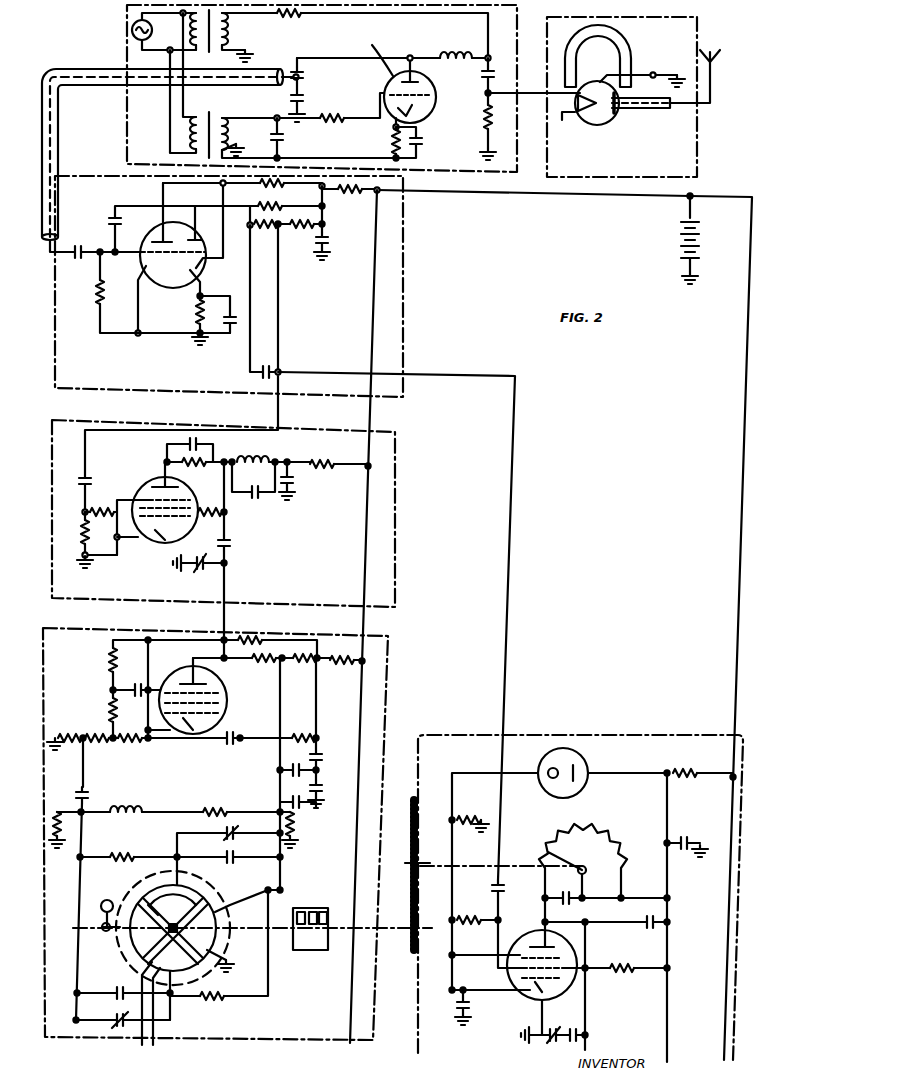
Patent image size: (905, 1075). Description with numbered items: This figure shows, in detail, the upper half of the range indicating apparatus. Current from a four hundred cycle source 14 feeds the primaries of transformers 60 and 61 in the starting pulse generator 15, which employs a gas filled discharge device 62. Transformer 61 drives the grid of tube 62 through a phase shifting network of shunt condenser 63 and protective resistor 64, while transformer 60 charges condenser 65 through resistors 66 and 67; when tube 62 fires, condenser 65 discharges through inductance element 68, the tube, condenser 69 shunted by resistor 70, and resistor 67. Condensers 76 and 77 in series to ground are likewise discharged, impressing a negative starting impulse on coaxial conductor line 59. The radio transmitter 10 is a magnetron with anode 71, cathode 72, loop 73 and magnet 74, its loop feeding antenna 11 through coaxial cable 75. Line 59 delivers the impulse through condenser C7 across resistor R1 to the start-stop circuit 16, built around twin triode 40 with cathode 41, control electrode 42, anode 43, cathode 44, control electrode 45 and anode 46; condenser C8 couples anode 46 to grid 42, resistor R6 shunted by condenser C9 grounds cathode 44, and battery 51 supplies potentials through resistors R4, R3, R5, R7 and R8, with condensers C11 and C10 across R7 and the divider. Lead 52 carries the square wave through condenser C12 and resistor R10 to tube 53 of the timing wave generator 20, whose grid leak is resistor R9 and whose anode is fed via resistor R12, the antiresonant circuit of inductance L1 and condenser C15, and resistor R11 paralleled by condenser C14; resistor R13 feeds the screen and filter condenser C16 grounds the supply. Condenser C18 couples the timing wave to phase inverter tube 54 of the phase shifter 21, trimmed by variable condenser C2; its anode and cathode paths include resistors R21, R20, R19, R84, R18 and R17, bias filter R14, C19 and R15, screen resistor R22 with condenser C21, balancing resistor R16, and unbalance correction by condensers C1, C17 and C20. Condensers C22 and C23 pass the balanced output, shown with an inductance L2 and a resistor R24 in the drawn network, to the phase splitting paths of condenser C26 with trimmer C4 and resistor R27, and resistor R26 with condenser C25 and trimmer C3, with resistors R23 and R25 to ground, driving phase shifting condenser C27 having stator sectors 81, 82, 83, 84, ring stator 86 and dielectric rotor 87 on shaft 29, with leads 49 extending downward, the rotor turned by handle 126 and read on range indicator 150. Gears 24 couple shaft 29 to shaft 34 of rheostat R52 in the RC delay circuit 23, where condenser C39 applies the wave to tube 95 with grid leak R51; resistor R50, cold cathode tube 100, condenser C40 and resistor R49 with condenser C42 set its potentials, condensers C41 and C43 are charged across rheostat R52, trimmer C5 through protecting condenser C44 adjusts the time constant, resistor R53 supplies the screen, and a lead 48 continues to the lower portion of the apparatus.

The radio transmitter 10 is at (698, 40).
The antenna 11 is at (721, 53).
The source 14 is at (131, 27).
The starting pulse generator 15 is at (519, 34).
The start-stop circuit 16 is at (403, 268).
The timing wave generator 20 is at (397, 498).
The phase shifter 21 is at (389, 653).
The RC delay circuit 23 is at (418, 1032).
The gears 24 is at (409, 918).
The condenser shaft 29 is at (284, 926).
The shaft of the variable resistor 34 is at (464, 866).
The electric discharge device 40 is at (164, 287).
The cathode 41 is at (146, 301).
The control electrode 42 is at (141, 255).
The anode 43 is at (152, 242).
The cathode 44 is at (201, 279).
The control electrode 45 is at (206, 261).
The anode 46 is at (198, 238).
The lead 48 is at (587, 1038).
The leads 49 is at (146, 1062).
The battery 51 is at (680, 239).
The lead 52 is at (280, 408).
The electric discharge device 53 is at (166, 538).
The electric discharge device 54 is at (228, 695).
The coaxial conductor line 59 is at (41, 116).
The transformer 60 is at (214, 50).
The transformer 61 is at (210, 113).
The gaseous discharge device 62 is at (426, 109).
The shunt condenser 63 is at (283, 141).
The protective resistor 64 is at (337, 116).
The condenser 65 is at (491, 74).
The resistor 66 is at (294, 18).
The resistor 67 is at (492, 125).
The inductance element 68 is at (457, 54).
The condenser 69 is at (415, 146).
The resistor 70 is at (390, 142).
The anode 71 is at (608, 126).
The cathode 72 is at (582, 124).
The loop 73 is at (617, 110).
The magnet 74 is at (630, 42).
The coaxial conductor cable 75 is at (658, 112).
The condenser 76 is at (306, 77).
The condenser 77 is at (306, 100).
The stator sector 81 is at (221, 919).
The stator sector 82 is at (149, 889).
The stator sector 83 is at (129, 905).
The stator sector 84 is at (195, 964).
The ring stator 86 is at (130, 963).
The dielectric rotor 87 is at (205, 904).
The electric discharge tube 95 is at (536, 930).
The cold cathode tube 100 is at (576, 764).
The handle 126 is at (98, 935).
The range indicator 150 is at (318, 906).
The variable condenser C1 is at (320, 769).
The variable condenser C2 is at (199, 568).
The variable condenser C3 is at (121, 1021).
The variable condenser C4 is at (230, 841).
The trimmer condenser C5 is at (550, 1031).
The condenser C7 is at (78, 244).
The condenser C8 is at (112, 221).
The condenser C9 is at (235, 328).
The condenser C10 is at (327, 239).
The condenser C11 is at (264, 364).
The condenser C12 is at (82, 476).
The condenser C14 is at (180, 442).
The condenser C15 is at (252, 495).
The filter condenser C16 is at (292, 485).
The condenser C17 is at (296, 806).
The condenser C18 is at (236, 592).
The condenser C19 is at (134, 700).
The protecting condenser C20 is at (287, 766).
The condenser C21 is at (228, 745).
The condenser C22 is at (306, 785).
The condenser C23 is at (76, 800).
The condenser C25 is at (123, 995).
The condenser C26 is at (252, 864).
The phase shifting condenser C27 is at (231, 953).
The condenser C39 is at (500, 874).
The condenser C40 is at (686, 839).
The condenser C41 is at (566, 905).
The condenser C42 is at (470, 1006).
The condenser C43 is at (605, 968).
The protecting condenser C44 is at (574, 1028).
The inductance element L1 is at (262, 459).
The inductor L2 is at (142, 801).
The resistor R1 is at (96, 293).
The resistor R3 is at (254, 188).
The resistor R4 is at (351, 198).
The resistor R5 is at (256, 204).
The resistor R6 is at (198, 316).
The resistor R7 is at (265, 296).
The resistor R8 is at (301, 216).
The grid leak resistor R9 is at (80, 536).
The resistor R10 is at (117, 522).
The resistor R11 is at (194, 468).
The resistor R12 is at (340, 453).
The resistor R13 is at (212, 498).
The resistor R14 is at (108, 706).
The resistor R15 is at (108, 663).
The resistor R16 is at (257, 640).
The resistor R17 is at (68, 740).
The resistor R18 is at (97, 744).
The resistor R19 is at (266, 665).
The resistor R20 is at (309, 667).
The resistor R21 is at (346, 652).
The resistor R22 is at (299, 774).
The resistor R23 is at (293, 826).
The resistor R24 is at (243, 803).
The resistor R25 is at (55, 828).
The resistor R26 is at (220, 953).
The resistor R27 is at (149, 848).
The resistor R49 is at (469, 894).
The resistor R50 is at (699, 907).
The grid leak resistor R51 is at (474, 911).
The rheostat R52 is at (583, 875).
The resistor R53 is at (616, 959).
The resistor R84 is at (170, 748).